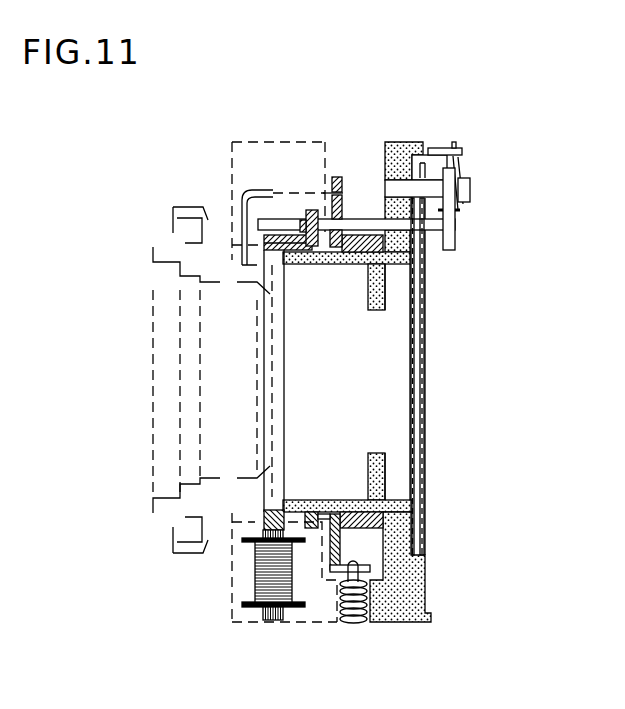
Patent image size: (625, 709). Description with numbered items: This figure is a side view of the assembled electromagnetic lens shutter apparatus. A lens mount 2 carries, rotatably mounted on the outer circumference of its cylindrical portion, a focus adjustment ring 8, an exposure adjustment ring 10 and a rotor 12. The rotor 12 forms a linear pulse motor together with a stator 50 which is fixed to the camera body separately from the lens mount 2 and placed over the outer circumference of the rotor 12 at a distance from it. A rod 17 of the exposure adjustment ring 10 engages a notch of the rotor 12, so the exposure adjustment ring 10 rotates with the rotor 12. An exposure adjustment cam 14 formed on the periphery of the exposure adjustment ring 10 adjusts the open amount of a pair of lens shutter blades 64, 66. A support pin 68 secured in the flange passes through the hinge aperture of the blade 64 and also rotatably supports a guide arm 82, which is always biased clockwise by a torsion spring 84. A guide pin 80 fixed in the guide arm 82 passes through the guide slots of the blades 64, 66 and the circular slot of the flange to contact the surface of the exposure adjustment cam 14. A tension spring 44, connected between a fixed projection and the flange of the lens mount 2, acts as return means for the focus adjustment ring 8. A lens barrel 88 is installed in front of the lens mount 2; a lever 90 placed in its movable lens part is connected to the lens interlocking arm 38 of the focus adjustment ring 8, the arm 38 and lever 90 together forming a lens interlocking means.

The lens mount 2 is at (418, 592).
The focus adjustment ring 8 is at (326, 580).
The exposure adjustment ring 10 is at (342, 203).
The rotor 12 is at (297, 240).
The exposure adjustment cam 14 is at (308, 210).
The rod 17 is at (256, 226).
The lens interlocking arm 38 is at (340, 177).
The tension spring 44 is at (352, 625).
The stator 50 is at (226, 592).
The lens shutter blade 64 is at (415, 423).
The lens shutter blade 66 is at (427, 353).
The support pin 68 is at (433, 182).
The guide pin 80 is at (432, 232).
The guide arm 82 is at (455, 243).
The torsion spring 84 is at (462, 167).
The lens barrel 88 is at (153, 335).
The lever 90 is at (264, 188).